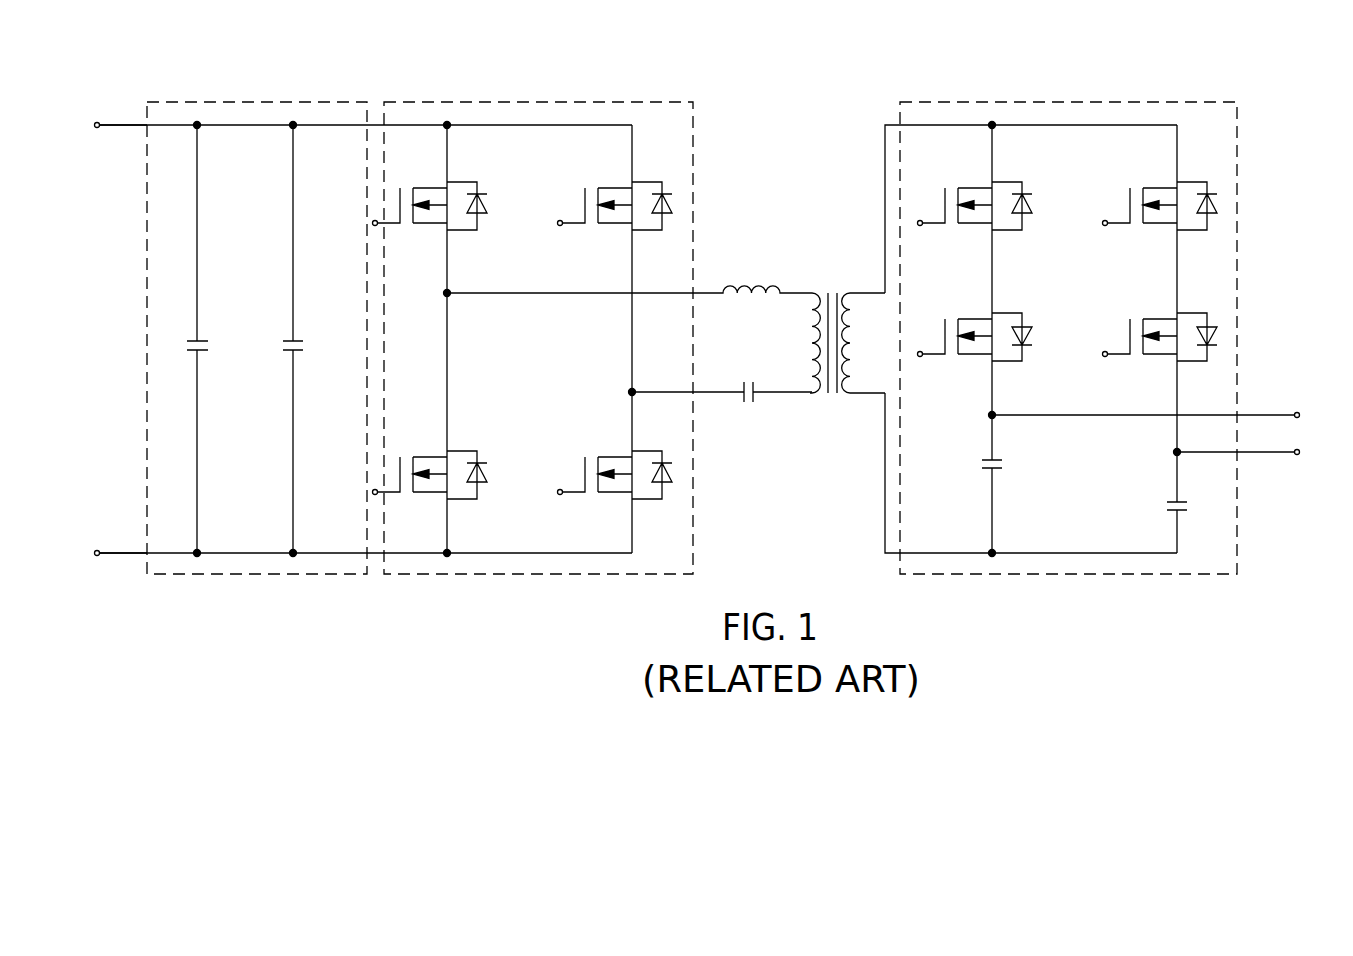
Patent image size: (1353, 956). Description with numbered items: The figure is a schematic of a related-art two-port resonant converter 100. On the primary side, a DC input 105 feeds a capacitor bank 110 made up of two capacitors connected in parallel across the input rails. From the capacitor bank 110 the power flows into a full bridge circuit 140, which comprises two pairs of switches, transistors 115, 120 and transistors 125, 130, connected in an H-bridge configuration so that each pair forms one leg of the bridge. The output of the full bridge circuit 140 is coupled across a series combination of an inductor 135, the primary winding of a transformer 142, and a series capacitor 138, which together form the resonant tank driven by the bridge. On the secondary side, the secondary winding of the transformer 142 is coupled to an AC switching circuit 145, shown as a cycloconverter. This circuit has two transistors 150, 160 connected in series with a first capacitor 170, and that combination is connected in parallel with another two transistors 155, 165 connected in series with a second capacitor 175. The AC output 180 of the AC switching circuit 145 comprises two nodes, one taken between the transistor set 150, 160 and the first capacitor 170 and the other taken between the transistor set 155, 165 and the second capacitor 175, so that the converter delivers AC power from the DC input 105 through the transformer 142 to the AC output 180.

The two-port resonant converter 100 is at (784, 67).
The DC input 105 is at (110, 339).
The capacitor bank 110 is at (286, 84).
The transistor 115 is at (483, 203).
The transistor 120 is at (483, 472).
The transistor 125 is at (585, 203).
The transistor 130 is at (585, 472).
The inductor 135 is at (751, 283).
The series capacitor 138 is at (748, 406).
The full bridge circuit 140 is at (556, 84).
The transformer 142 is at (830, 282).
The AC switching circuit 145 is at (1056, 84).
The transistor 150 is at (1027, 203).
The transistor 155 is at (1128, 203).
The transistor 160 is at (1027, 334).
The transistor 165 is at (1128, 334).
The first capacitor 170 is at (1010, 465).
The second capacitor 175 is at (1160, 504).
The AC output 180 is at (1161, 334).